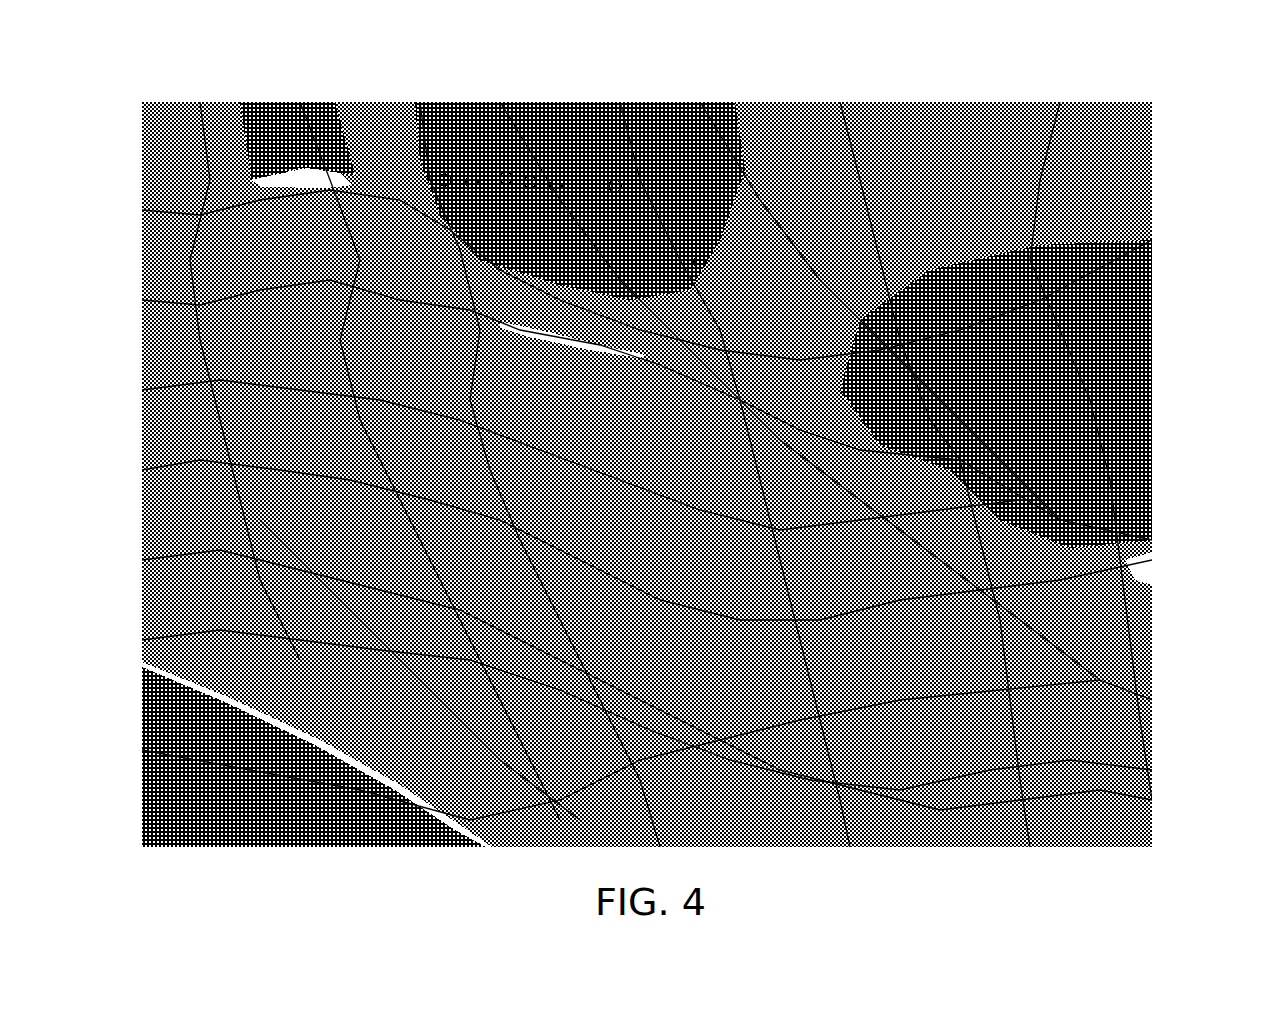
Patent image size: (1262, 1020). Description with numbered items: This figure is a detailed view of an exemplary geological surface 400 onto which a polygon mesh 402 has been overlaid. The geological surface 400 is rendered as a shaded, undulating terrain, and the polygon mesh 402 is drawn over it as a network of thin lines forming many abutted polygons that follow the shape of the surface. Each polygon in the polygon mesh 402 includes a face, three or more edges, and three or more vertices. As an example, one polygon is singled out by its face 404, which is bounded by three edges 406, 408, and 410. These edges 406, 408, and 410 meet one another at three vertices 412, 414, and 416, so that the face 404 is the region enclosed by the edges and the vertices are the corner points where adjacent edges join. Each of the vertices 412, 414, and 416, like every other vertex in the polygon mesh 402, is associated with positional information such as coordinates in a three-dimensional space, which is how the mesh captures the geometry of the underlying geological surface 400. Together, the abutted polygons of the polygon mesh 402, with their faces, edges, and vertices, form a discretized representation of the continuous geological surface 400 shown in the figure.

The geological surface 400 is at (1012, 103).
The polygon mesh 402 is at (1120, 258).
The face 404 is at (531, 178).
The edge 406 is at (557, 182).
The edge 408 is at (700, 256).
The edge 410 is at (473, 178).
The vertex 412 is at (445, 176).
The vertex 414 is at (507, 174).
The vertex 416 is at (616, 182).